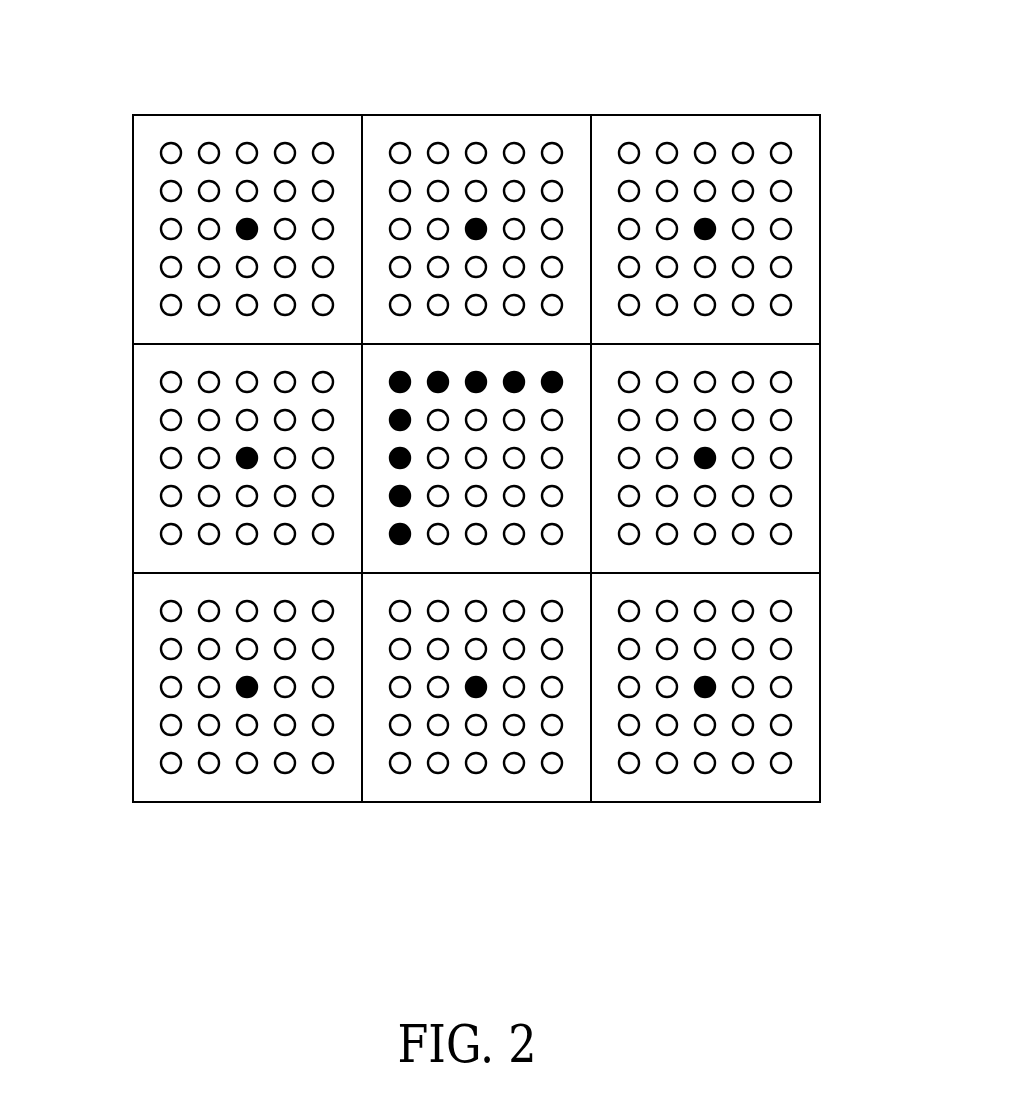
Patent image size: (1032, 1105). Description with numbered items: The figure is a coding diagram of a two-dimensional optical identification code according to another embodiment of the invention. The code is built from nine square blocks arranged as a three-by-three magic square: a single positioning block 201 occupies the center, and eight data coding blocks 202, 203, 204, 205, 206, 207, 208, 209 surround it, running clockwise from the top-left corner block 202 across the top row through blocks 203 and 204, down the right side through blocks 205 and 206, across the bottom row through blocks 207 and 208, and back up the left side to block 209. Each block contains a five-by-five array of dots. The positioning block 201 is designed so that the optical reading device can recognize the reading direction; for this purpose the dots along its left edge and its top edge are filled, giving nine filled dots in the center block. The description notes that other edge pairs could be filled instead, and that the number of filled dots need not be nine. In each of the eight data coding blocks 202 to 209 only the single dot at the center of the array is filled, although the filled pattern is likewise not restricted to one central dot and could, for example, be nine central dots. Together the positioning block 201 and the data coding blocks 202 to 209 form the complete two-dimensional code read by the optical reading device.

The positioning block 201 is at (421, 365).
The data coding block 202 is at (196, 138).
The data coding block 203 is at (503, 138).
The data coding block 204 is at (777, 128).
The data coding block 205 is at (780, 443).
The data coding block 206 is at (743, 780).
The data coding block 207 is at (462, 783).
The data coding block 208 is at (217, 780).
The data coding block 209 is at (172, 438).